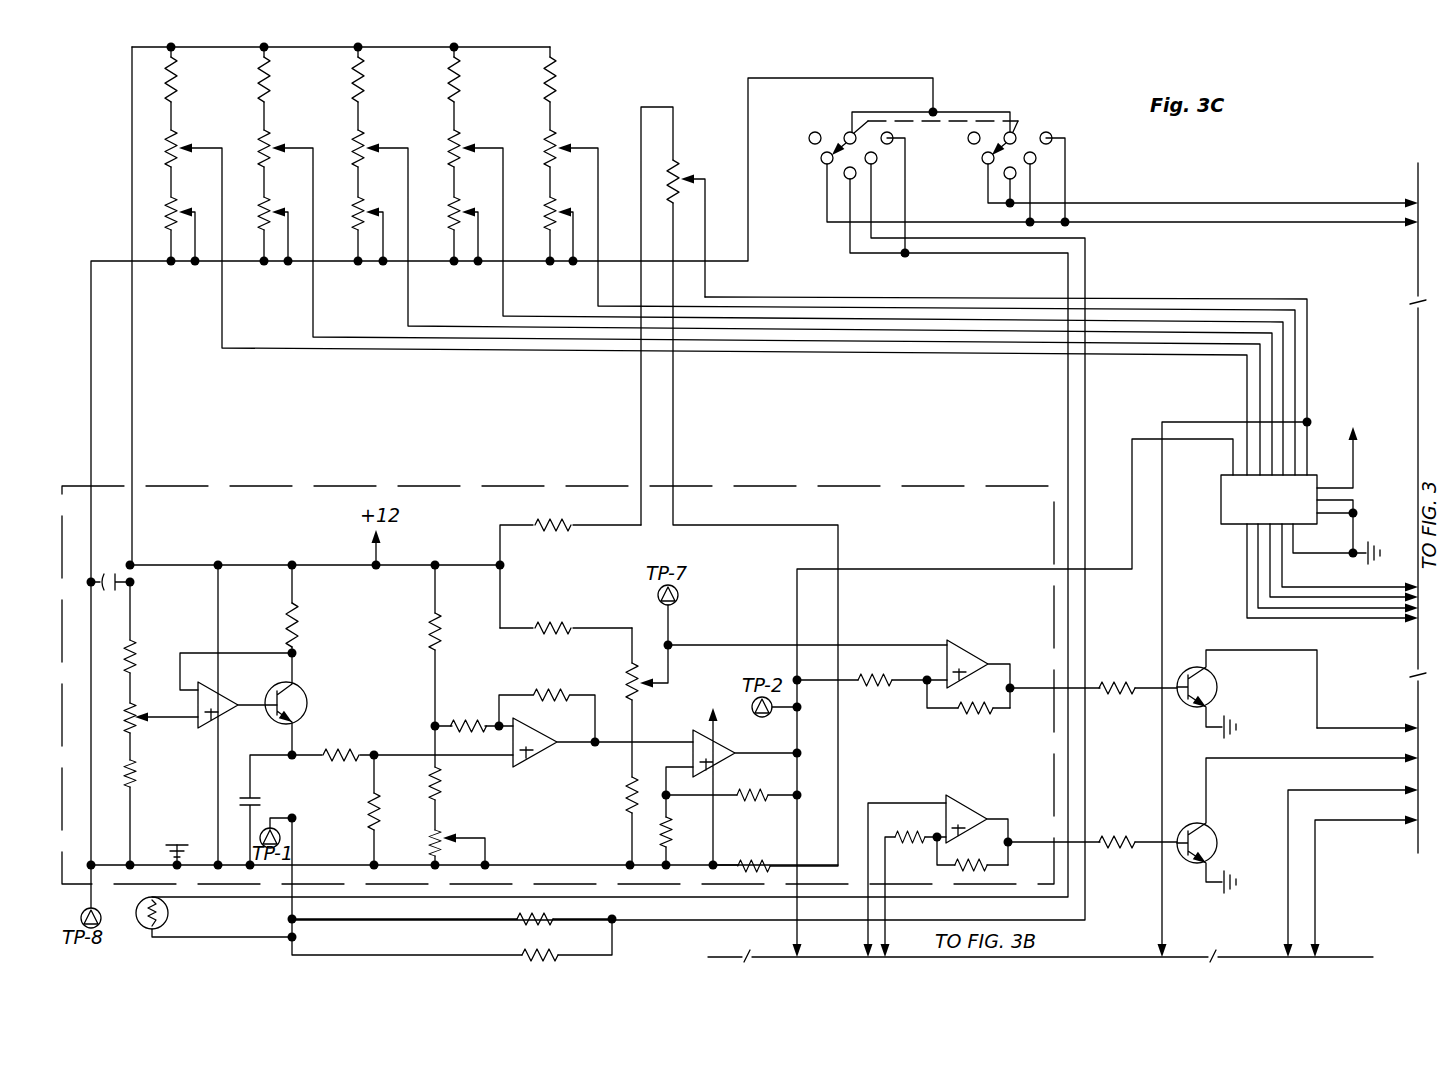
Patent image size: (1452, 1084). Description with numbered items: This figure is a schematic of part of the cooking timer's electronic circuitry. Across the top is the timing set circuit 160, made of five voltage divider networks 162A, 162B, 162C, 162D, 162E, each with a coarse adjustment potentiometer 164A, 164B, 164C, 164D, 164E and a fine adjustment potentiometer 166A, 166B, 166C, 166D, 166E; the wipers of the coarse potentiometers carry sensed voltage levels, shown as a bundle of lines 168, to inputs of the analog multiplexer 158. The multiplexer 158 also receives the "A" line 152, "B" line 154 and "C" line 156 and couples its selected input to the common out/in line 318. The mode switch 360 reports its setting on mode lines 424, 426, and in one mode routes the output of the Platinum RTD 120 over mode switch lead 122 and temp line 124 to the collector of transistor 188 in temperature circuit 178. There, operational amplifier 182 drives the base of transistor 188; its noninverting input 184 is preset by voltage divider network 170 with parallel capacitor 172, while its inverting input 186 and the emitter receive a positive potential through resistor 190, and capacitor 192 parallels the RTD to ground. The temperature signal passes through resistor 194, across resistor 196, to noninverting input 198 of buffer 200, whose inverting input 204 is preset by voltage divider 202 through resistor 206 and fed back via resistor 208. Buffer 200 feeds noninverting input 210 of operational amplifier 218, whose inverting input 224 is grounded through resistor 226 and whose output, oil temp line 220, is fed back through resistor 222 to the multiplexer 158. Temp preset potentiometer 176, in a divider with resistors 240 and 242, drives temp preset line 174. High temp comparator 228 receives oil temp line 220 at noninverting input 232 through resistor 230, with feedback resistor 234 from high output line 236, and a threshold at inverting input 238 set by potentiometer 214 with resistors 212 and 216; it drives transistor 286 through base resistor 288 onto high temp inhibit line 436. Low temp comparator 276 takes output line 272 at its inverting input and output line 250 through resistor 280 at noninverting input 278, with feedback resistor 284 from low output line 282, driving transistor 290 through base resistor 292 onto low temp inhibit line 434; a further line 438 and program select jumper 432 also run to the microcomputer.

The Platinum RTD 120 is at (146, 926).
The mode switch lead 122 is at (1062, 258).
The temp line 124 is at (1085, 480).
The "A" line 152 is at (1330, 619).
The "B" line 154 is at (1358, 609).
The "C" line 156 is at (1380, 596).
The analog multiplexer 158 is at (1288, 512).
The timing set circuit 160 is at (580, 95).
The voltage divider network 162A is at (165, 78).
The voltage divider network 162B is at (262, 86).
The voltage divider network 162C is at (356, 86).
The voltage divider network 162D is at (452, 86).
The voltage divider network 162E is at (548, 86).
The coarse adjustment potentiometer 164A is at (165, 147).
The coarse adjustment potentiometer 164B is at (258, 144).
The coarse adjustment potentiometer 164C is at (352, 144).
The coarse adjustment potentiometer 164D is at (448, 144).
The coarse adjustment potentiometer 164E is at (545, 144).
The fine adjustment potentiometer 166A is at (165, 213).
The fine adjustment potentiometer 166B is at (262, 228).
The fine adjustment potentiometer 166C is at (356, 228).
The fine adjustment potentiometer 166D is at (452, 228).
The fine adjustment potentiometer 166E is at (548, 228).
The line bundle 168 is at (886, 300).
The voltage divider network 170 is at (128, 738).
The capacitor 172 is at (111, 595).
The temp preset line 174 is at (960, 297).
The temp preset potentiometer 176 is at (681, 164).
The temperature circuit 178 is at (946, 486).
The operational amplifier 182 is at (206, 730).
The noninverting input 184 is at (165, 722).
The inverting input 186 is at (258, 652).
The transistor 188 is at (300, 696).
The resistor 190 is at (300, 613).
The capacitor 192 is at (268, 800).
The resistor 194 is at (342, 752).
The resistor 196 is at (372, 814).
The noninverting input 198 is at (410, 752).
The buffer 200 is at (535, 762).
The voltage divider 202 is at (430, 630).
The inverting input 204 is at (500, 729).
The resistor 206 is at (470, 724).
The feed back resistor 208 is at (580, 694).
The noninverting input 210 is at (668, 741).
The resistor 212 is at (560, 627).
The potentiometer 214 is at (628, 680).
The resistor 216 is at (628, 800).
The operational amplifier 218 is at (718, 756).
The oil temp line 220 is at (982, 569).
The feed back resistor 222 is at (746, 797).
The inverting input 224 is at (666, 792).
The resistor 226 is at (666, 842).
The high temp comparator 228 is at (976, 660).
The resistor 230 is at (884, 690).
The noninverting input 232 is at (940, 680).
The feed back resistor 234 is at (970, 720).
The high output line 236 is at (1033, 690).
The inverting input 238 is at (872, 646).
The resistor 240 is at (570, 526).
The resistor 242 is at (770, 868).
The output line 250 is at (885, 914).
The output line 272 is at (868, 914).
The low temp comparator 276 is at (958, 812).
The noninverting input 278 is at (936, 836).
The resistor 280 is at (934, 841).
The low output line 282 is at (1030, 842).
The feed back resistor 284 is at (1000, 866).
The transistor 286 is at (1200, 685).
The base resistor 288 is at (1113, 700).
The transistor 290 is at (1205, 846).
The base resistor 292 is at (1130, 840).
The common out/in line 318 is at (1328, 586).
The mode switch 360 is at (958, 167).
The mode line 424 is at (1172, 201).
The mode line 426 is at (1200, 224).
The program select jumper 432 is at (1372, 820).
The low temp inhibit line 434 is at (1340, 757).
The high temp inhibit line 436 is at (1333, 727).
The line 438 is at (1360, 790).